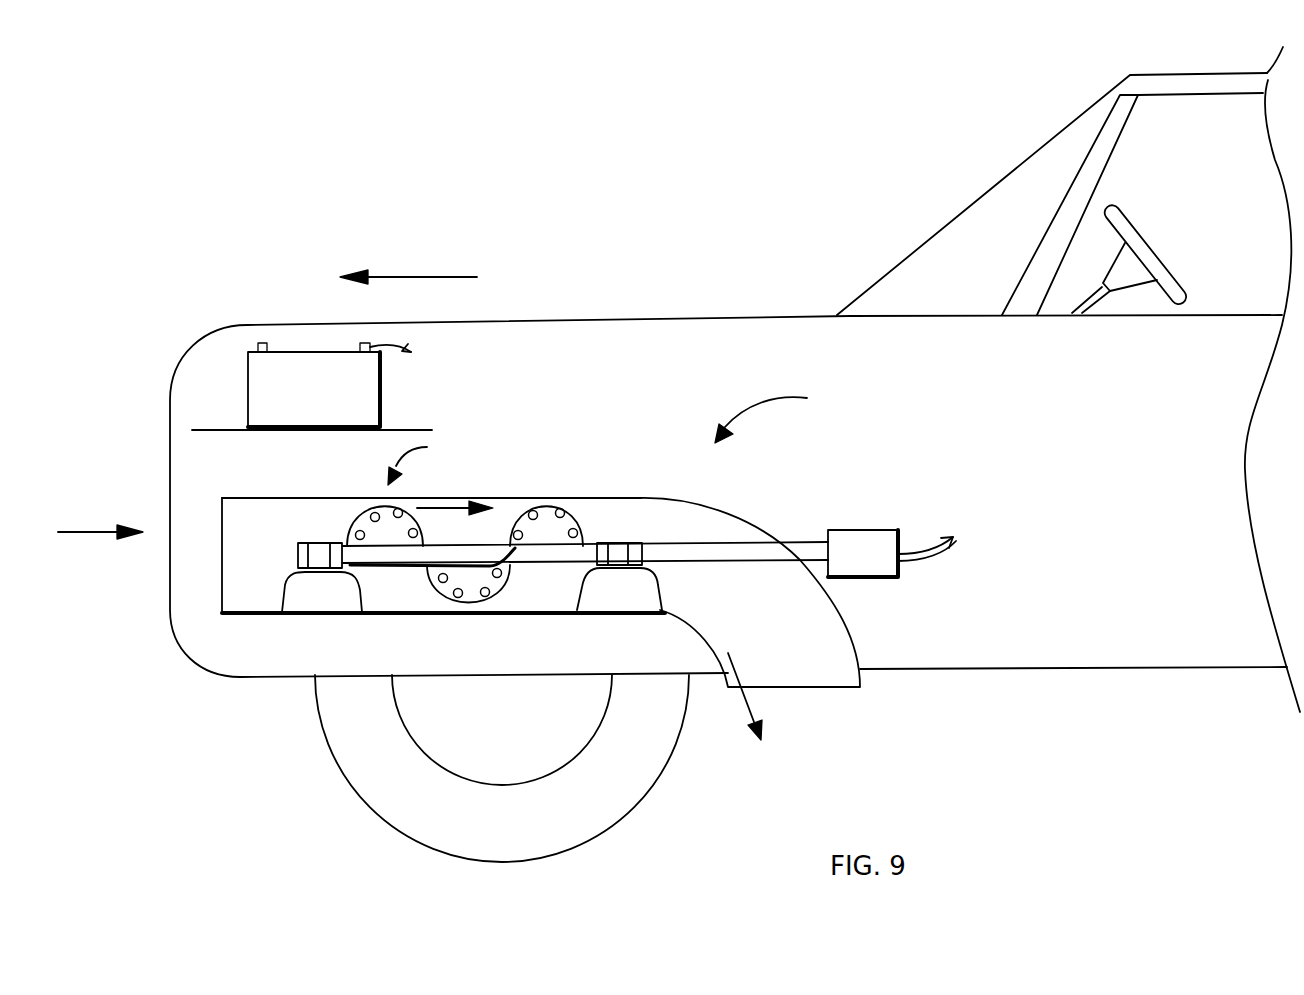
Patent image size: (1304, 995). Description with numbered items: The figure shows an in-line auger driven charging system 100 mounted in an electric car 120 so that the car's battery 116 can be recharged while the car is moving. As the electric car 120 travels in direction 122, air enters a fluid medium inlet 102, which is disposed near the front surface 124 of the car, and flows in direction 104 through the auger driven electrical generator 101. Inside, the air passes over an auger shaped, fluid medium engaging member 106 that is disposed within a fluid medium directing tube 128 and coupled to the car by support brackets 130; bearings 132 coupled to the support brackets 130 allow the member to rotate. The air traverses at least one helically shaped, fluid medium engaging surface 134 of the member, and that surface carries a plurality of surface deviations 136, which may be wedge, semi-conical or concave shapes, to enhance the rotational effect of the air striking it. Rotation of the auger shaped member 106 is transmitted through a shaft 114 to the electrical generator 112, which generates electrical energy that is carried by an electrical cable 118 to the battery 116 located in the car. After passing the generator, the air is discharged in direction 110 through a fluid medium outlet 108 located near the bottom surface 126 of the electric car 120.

The in-line auger driven charging system 100 is at (788, 414).
The auger driven electrical generator 101 is at (430, 459).
The fluid medium inlet 102 is at (222, 600).
The direction of fluid medium flow 104 is at (92, 533).
The auger shaped, fluid medium engaging member 106 is at (505, 498).
The fluid medium outlet 108 is at (789, 673).
The direction of discharge 110 is at (747, 705).
The electrical generator 112 is at (866, 530).
The shaft 114 is at (731, 548).
The battery 116 is at (283, 352).
The electrical cable 118 is at (406, 346).
The electric car 120 is at (1104, 445).
The direction of movement 122 is at (440, 277).
The front surface 124 is at (169, 473).
The bottom surface 126 is at (935, 668).
The fluid medium directing tube 128 is at (258, 498).
The support brackets 130 is at (279, 601).
The bearings 132 is at (300, 556).
The helically shaped, fluid medium engaging surface 134 is at (482, 606).
The surface deviations 136 is at (426, 600).